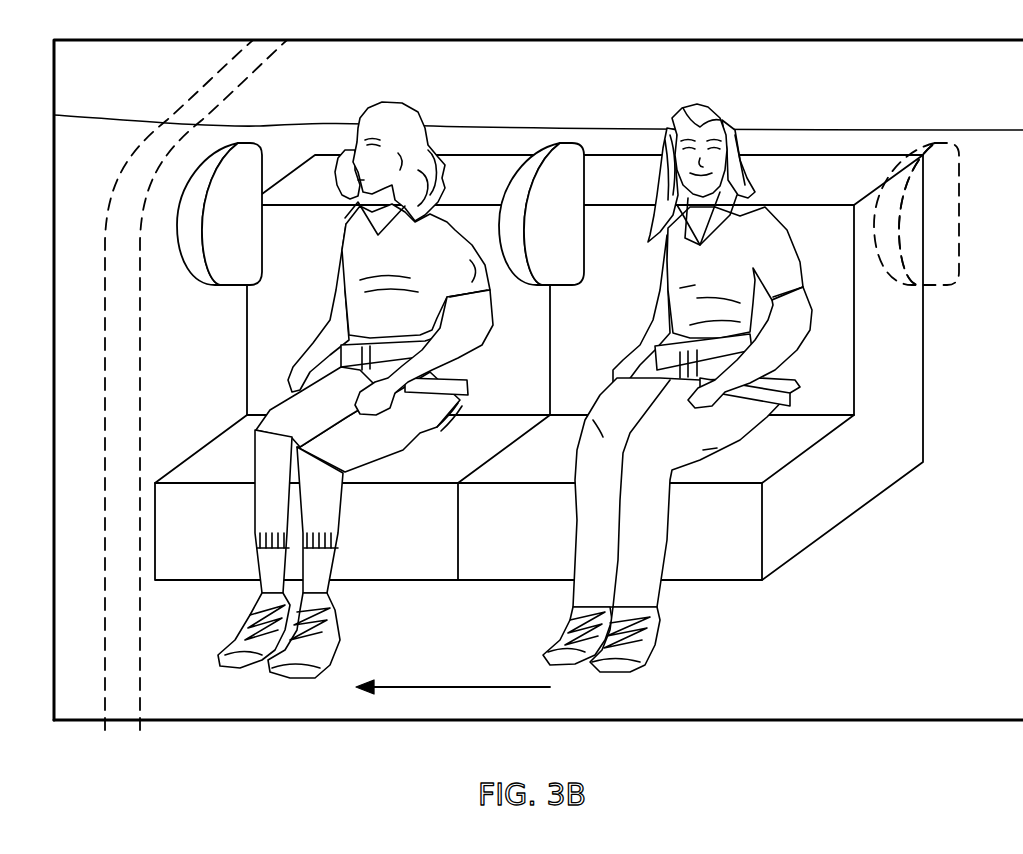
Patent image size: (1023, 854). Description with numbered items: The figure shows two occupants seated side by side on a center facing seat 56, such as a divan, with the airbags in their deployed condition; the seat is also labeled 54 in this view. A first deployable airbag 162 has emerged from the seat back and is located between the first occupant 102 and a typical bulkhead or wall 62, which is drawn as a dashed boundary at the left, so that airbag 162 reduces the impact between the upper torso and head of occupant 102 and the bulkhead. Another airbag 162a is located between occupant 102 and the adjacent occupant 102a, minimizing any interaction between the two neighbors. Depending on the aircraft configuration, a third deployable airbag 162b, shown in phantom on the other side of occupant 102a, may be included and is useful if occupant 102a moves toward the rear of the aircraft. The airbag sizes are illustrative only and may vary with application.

The bulkhead or wall 62 is at (212, 87).
The center facing seat 56 is at (539, 399).
The seat cushion 54 is at (427, 567).
The deployable airbag 162 is at (250, 183).
The airbag 162a is at (572, 160).
The third deployable airbag 162b is at (943, 163).
The first occupant 102 is at (440, 228).
The occupant 102a is at (757, 207).